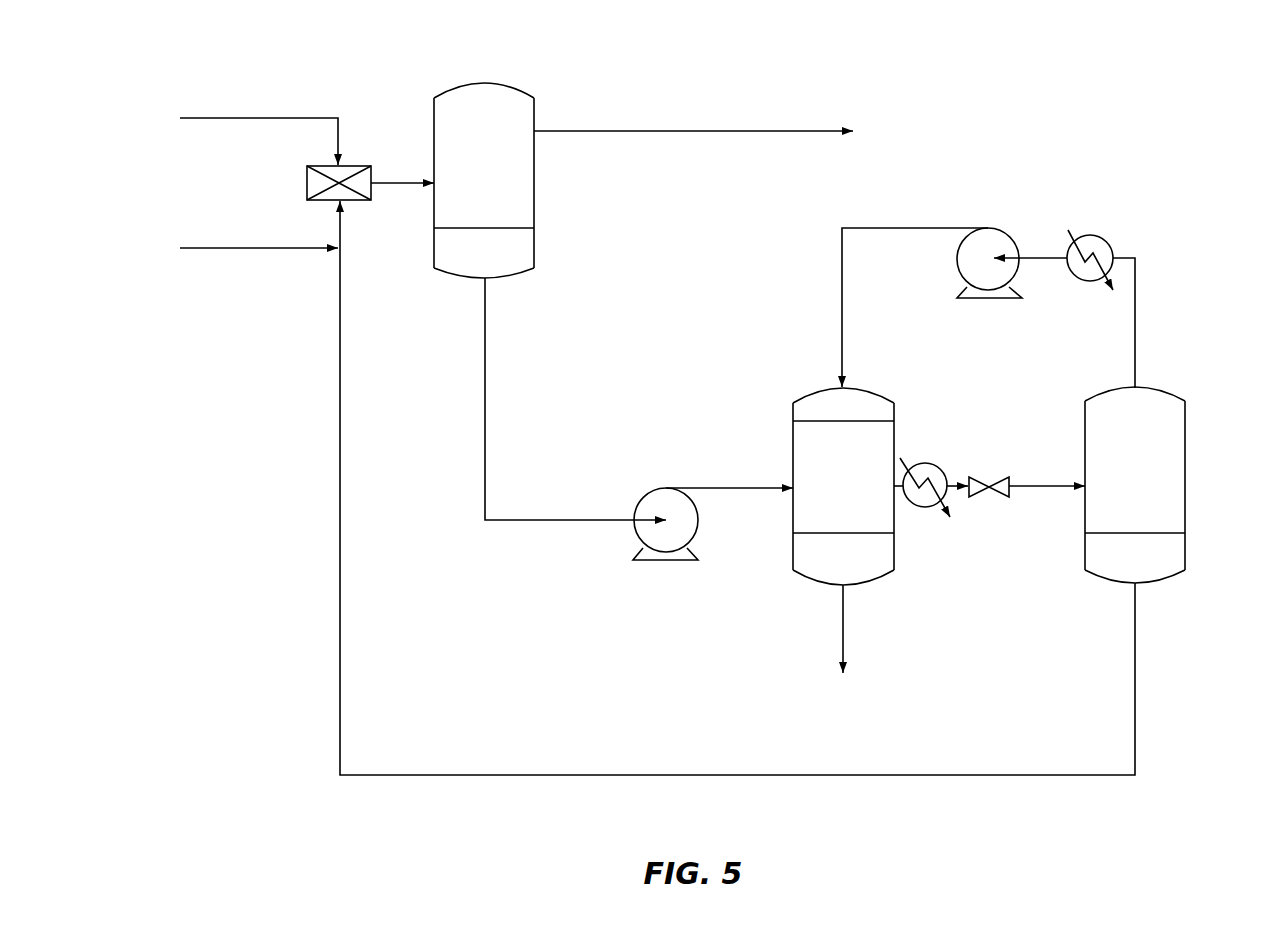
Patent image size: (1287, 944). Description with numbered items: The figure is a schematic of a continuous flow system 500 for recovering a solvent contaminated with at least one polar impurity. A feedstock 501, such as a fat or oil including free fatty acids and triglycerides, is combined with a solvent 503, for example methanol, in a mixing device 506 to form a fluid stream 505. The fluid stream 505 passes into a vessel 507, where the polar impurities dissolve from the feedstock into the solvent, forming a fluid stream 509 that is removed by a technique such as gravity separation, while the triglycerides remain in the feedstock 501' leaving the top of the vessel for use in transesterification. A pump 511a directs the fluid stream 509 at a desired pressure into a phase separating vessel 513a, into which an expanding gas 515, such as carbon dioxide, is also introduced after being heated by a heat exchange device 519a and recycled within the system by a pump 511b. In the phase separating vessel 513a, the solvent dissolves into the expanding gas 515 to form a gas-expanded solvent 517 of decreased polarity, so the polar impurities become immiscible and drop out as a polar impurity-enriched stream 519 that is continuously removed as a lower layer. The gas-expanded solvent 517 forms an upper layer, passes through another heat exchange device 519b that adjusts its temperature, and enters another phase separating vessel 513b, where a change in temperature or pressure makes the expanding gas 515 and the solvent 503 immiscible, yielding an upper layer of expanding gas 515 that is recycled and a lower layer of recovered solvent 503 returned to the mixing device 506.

The continuous flow system 500 is at (165, 82).
The feedstock 501 is at (259, 130).
The feedstock 501' is at (658, 139).
The solvent 503 is at (1153, 567).
The fluid stream 505 is at (402, 172).
The mixing device 506 is at (312, 185).
The vessel 507 is at (478, 83).
The fluid stream 509 is at (466, 263).
The pump 511a is at (652, 558).
The pump 511b is at (982, 300).
The phase separating vessel 513a is at (877, 573).
The another phase separating vessel 513b is at (1175, 408).
The expanding gas 515 is at (825, 416).
The gas-expanded solvent 517 is at (825, 478).
The polar impurity-enriched stream 519 is at (825, 570).
The heat exchange device 519a is at (1102, 248).
The another heat exchange device 519b is at (922, 504).